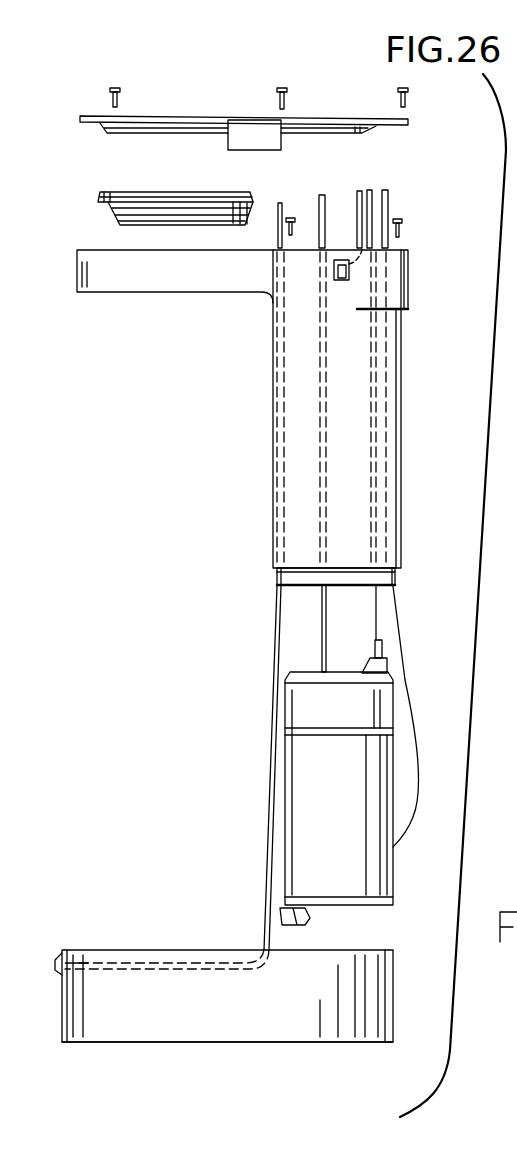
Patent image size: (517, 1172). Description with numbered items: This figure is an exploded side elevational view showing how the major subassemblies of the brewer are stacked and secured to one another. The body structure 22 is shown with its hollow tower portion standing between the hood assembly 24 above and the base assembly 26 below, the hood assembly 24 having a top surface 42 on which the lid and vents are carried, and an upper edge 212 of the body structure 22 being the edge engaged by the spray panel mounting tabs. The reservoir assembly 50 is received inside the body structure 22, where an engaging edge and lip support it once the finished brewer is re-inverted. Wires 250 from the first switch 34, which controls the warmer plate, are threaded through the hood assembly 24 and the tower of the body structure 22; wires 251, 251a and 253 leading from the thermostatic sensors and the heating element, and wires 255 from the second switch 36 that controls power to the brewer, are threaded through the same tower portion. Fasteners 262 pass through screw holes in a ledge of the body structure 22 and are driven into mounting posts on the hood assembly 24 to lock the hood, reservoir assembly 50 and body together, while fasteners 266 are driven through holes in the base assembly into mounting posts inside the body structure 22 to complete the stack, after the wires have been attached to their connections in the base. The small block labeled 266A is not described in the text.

The body structure 22 is at (266, 464).
The hood assembly 24 is at (164, 930).
The base assembly 26 is at (164, 283).
The first switch 34 is at (57, 953).
The second switch 36 is at (341, 281).
The top surface 42 is at (327, 1043).
The reservoir assembly 50 is at (276, 799).
The upper edge 212 is at (303, 588).
The wires 250 is at (279, 232).
The wire 251 is at (391, 204).
The wire 251a is at (318, 200).
The wire 253 is at (374, 189).
The wires 255 is at (356, 194).
The fasteners 262 is at (288, 228).
The fasteners 266 is at (121, 91).
The screw block 266A is at (257, 116).